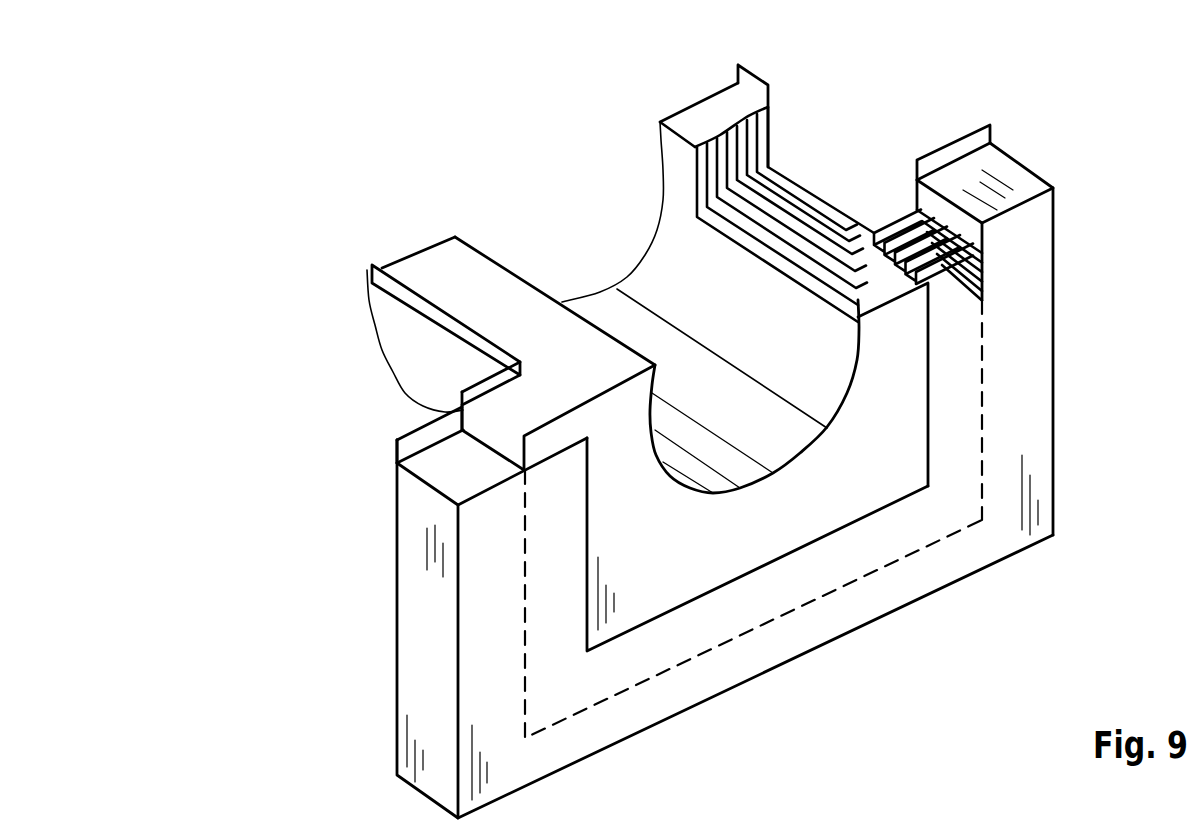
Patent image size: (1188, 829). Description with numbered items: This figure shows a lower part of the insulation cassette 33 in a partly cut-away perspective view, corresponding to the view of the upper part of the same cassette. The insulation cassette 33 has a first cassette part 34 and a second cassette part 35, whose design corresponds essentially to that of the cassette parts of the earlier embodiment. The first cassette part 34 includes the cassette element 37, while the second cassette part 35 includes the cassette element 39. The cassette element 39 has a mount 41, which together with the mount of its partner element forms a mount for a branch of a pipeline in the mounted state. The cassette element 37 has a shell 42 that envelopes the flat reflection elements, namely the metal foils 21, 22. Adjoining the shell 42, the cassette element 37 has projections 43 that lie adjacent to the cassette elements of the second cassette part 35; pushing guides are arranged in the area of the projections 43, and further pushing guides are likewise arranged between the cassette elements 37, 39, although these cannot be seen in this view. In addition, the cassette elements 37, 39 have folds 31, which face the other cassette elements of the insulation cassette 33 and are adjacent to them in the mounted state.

The metal foil 21 is at (710, 215).
The metal foil 22 is at (707, 218).
The fold 31 is at (945, 152).
The insulation cassette 33 is at (262, 108).
The first cassette part 34 is at (320, 520).
The second cassette part 35 is at (462, 183).
The cassette element 37 is at (463, 466).
The cassette element 39 is at (870, 482).
The mount 41 is at (677, 287).
The shell 42 is at (450, 283).
The projection 43 is at (957, 348).